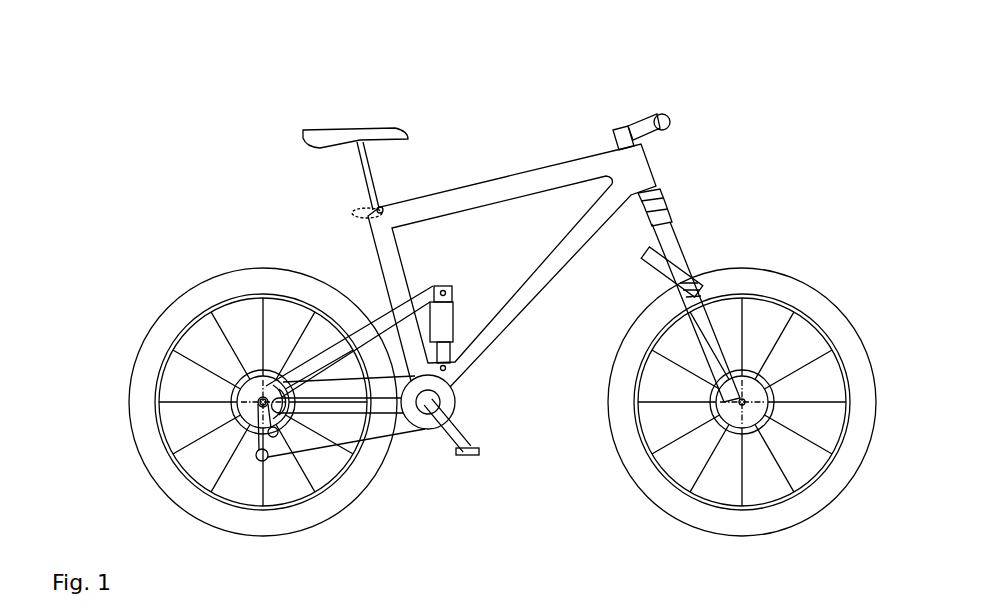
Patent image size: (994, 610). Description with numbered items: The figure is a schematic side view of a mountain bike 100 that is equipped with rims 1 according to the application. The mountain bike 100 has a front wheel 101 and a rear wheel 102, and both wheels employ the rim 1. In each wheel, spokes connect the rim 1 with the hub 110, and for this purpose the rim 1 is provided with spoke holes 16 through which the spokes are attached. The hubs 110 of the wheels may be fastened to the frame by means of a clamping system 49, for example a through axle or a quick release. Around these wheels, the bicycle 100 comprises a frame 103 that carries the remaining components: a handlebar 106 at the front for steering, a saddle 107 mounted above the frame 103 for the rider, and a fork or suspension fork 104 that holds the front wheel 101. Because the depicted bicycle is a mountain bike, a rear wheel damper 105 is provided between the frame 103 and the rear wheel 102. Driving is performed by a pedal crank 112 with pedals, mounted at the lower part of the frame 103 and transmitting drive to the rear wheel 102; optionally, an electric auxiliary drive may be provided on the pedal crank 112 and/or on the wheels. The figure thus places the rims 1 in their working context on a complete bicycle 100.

The mountain bike 100 is at (212, 158).
The front wheel 101 is at (828, 267).
The rear wheel 102 is at (183, 275).
The frame 103 is at (530, 180).
The suspension fork 104 is at (697, 270).
The rear wheel damper 105 is at (445, 313).
The handlebar 106 is at (663, 113).
The saddle 107 is at (362, 127).
The hub 110 is at (228, 394).
The pedal crank 112 is at (457, 473).
The rim 1 is at (338, 483).
The spoke holes 16 is at (263, 402).
The clamping system 49 is at (263, 402).